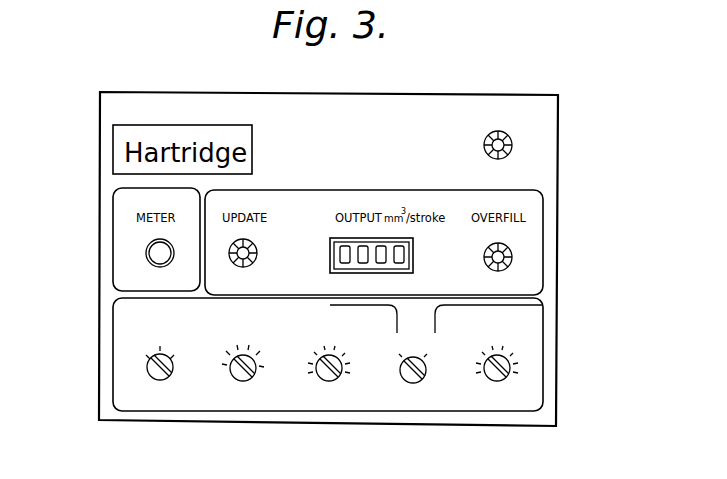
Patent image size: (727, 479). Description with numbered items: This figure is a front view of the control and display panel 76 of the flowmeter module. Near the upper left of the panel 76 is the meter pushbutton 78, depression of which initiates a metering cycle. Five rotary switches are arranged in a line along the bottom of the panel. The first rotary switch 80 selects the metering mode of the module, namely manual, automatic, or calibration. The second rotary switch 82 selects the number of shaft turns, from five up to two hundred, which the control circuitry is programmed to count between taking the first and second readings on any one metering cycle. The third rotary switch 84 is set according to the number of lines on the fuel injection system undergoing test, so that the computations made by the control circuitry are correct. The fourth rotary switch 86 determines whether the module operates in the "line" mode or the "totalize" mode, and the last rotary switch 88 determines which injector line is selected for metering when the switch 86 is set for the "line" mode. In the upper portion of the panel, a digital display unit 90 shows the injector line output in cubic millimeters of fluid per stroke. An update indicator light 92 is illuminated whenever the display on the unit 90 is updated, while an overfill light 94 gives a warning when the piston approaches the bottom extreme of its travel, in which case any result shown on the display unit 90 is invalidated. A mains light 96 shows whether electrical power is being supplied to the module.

The control and display panel 76 is at (98, 226).
The meter pushbutton 78 is at (147, 258).
The first rotary switch 80 is at (147, 367).
The second rotary switch 82 is at (235, 377).
The third rotary switch 84 is at (327, 381).
The fourth rotary switch 86 is at (410, 383).
The last rotary switch 88 is at (501, 381).
The digital display unit 90 is at (417, 246).
The update indicator light 92 is at (251, 248).
The overfill light 94 is at (504, 257).
The mains light 96 is at (504, 145).